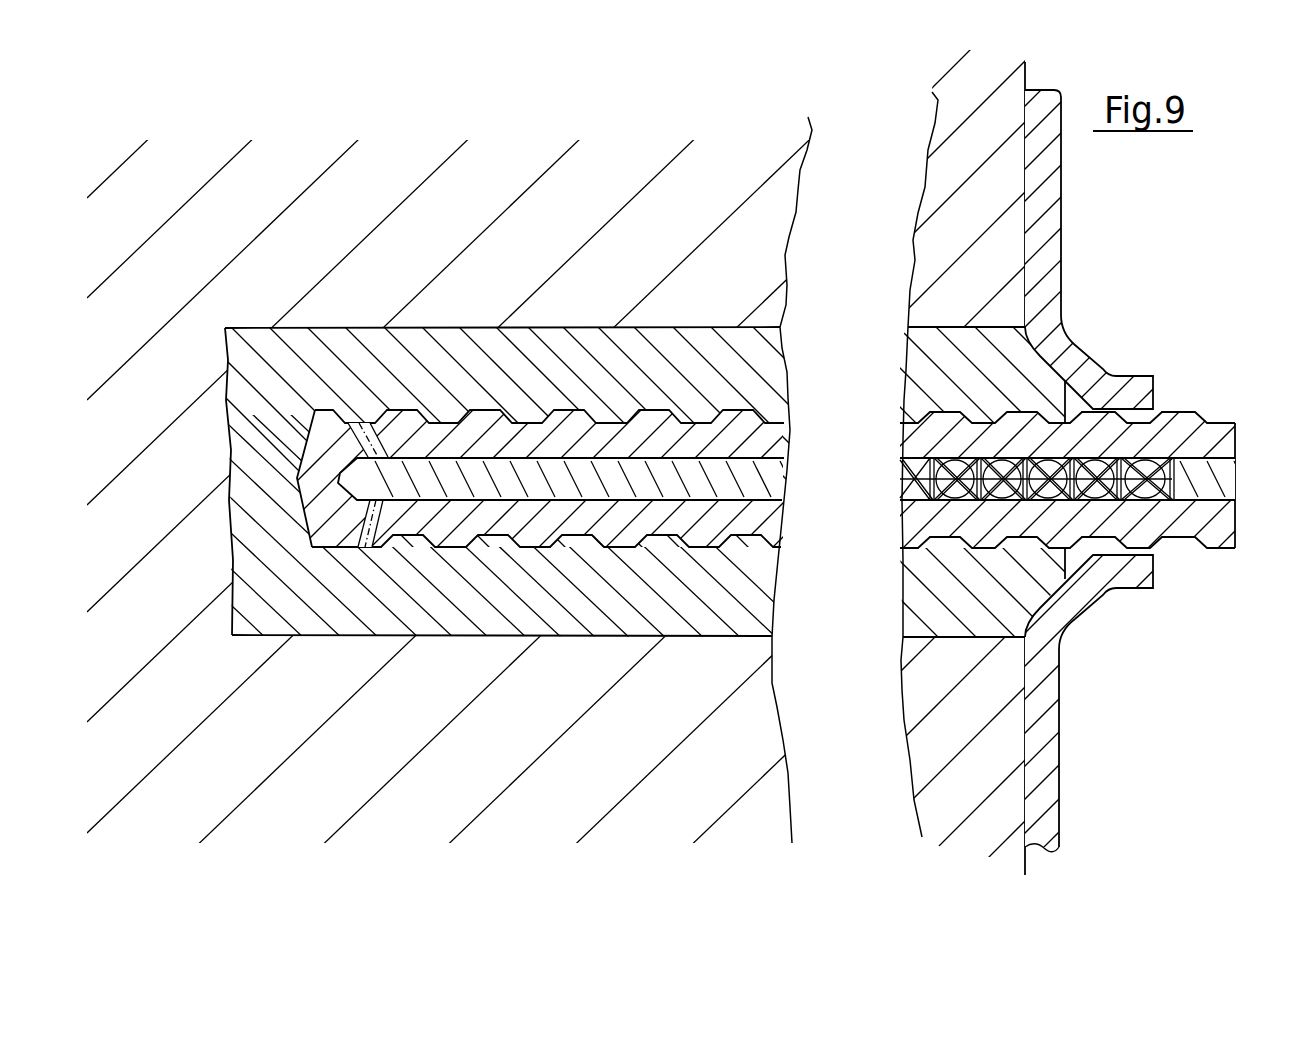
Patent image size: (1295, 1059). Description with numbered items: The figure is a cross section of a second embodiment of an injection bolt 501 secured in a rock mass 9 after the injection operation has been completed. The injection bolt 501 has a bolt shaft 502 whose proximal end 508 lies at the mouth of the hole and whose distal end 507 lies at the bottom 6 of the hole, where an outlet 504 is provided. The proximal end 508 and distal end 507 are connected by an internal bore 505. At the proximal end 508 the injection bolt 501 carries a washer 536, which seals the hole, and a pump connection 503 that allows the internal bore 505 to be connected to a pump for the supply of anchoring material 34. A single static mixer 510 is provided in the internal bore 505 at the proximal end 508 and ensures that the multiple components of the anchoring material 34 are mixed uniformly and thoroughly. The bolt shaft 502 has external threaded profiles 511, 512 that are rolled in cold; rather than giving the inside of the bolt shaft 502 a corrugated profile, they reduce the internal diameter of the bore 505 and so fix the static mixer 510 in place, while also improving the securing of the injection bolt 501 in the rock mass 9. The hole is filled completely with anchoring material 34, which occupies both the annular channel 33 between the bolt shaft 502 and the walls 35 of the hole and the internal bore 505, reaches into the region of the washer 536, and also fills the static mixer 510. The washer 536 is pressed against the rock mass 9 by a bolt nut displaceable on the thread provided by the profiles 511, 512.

The bottom of the hole 6 is at (523, 446).
The rock mass 9 is at (228, 240).
The annular channel 33 is at (546, 624).
The anchoring material 34 is at (582, 368).
The walls of the hole 35 is at (703, 333).
The injection bolt 501 is at (552, 548).
The bolt shaft 502 is at (588, 420).
The pump connection 503 is at (1023, 442).
The outlet 504 is at (363, 550).
The internal bore 505 is at (684, 483).
The distal end 507 is at (322, 420).
The proximal end 508 is at (1200, 515).
The static mixer 510 is at (1113, 437).
The external threaded profile 511 is at (1097, 422).
The external threaded profile 512 is at (569, 484).
The washer 536 is at (1048, 168).